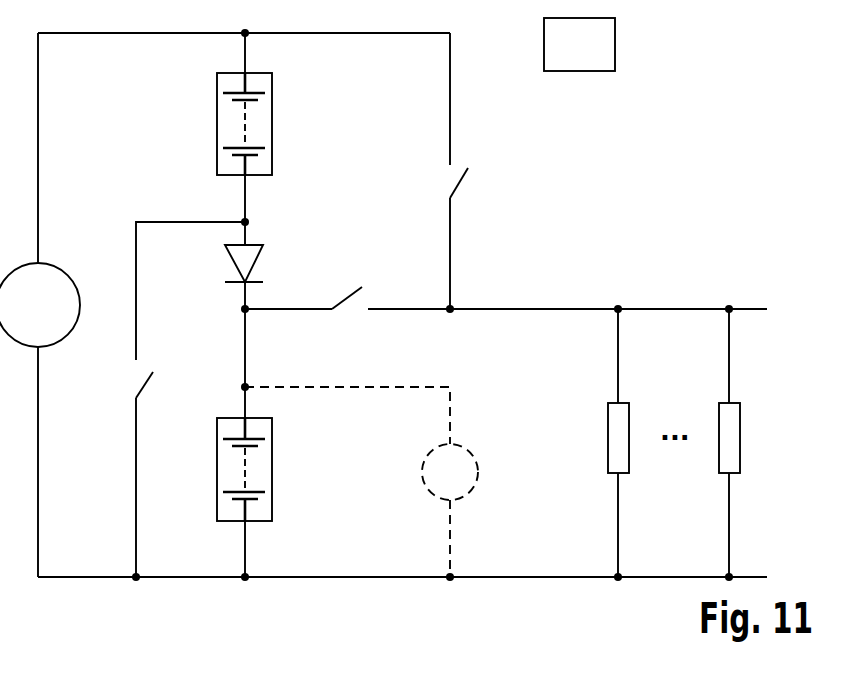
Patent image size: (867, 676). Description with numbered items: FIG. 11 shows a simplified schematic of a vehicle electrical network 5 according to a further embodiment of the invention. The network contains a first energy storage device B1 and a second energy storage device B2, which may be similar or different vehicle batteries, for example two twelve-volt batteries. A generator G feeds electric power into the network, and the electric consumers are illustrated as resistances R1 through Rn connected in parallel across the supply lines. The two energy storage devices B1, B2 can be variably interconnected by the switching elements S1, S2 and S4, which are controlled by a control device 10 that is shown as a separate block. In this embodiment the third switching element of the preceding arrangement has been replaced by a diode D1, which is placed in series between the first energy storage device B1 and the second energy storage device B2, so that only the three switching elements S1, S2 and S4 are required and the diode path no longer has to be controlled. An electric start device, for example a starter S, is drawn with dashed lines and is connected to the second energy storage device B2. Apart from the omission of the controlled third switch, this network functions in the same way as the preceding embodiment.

The vehicle electrical network 5 is at (660, 88).
The control device 10 is at (580, 71).
The generator G is at (40, 305).
The first energy storage device B1 is at (267, 124).
The second energy storage device B2 is at (267, 469).
The diode D1 is at (223, 260).
The first switching element S1 is at (475, 193).
The second switching element S2 is at (339, 282).
The fourth switching element S4 is at (160, 396).
The first resistance R1 is at (638, 430).
The n-th resistance Rn is at (750, 429).
The starter S is at (361, 482).